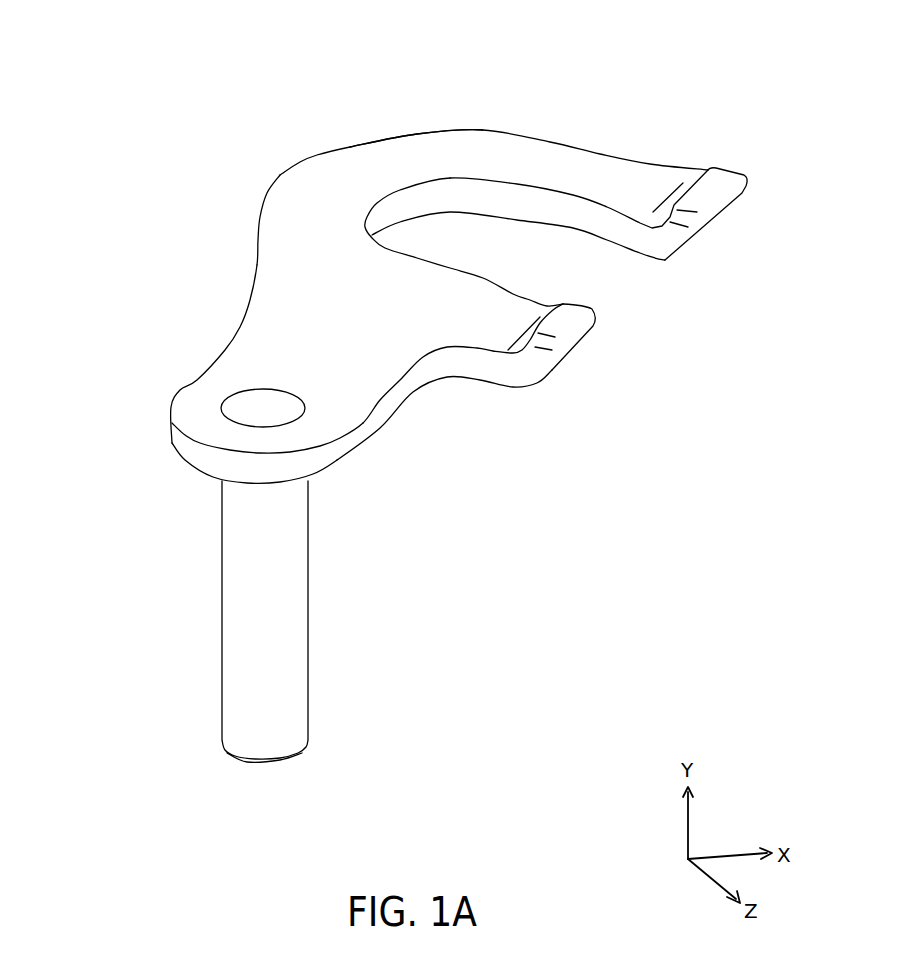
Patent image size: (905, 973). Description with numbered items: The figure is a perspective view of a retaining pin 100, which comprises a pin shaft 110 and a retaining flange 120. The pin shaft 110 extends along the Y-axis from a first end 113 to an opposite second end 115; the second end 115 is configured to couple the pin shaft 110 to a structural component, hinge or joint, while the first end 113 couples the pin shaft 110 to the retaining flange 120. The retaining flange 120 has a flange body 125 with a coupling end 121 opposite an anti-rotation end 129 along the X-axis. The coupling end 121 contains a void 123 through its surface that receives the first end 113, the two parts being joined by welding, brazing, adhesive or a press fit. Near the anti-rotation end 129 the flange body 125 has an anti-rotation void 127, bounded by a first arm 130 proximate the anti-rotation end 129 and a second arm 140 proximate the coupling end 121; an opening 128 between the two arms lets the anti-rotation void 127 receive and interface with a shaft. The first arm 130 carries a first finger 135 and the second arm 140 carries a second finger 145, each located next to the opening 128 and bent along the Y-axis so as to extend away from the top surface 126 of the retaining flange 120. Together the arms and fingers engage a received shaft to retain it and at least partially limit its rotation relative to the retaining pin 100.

The retaining pin 100 is at (134, 90).
The pin shaft 110 is at (300, 607).
The first end 113 is at (273, 413).
The second end 115 is at (268, 762).
The retaining flange 120 is at (272, 168).
The coupling end 121 is at (198, 428).
The void 123 is at (220, 407).
The flange body 125 is at (290, 312).
The top surface 126 is at (267, 242).
The anti-rotation void 127 is at (514, 262).
The opening 128 is at (630, 288).
The anti-rotation end 129 is at (417, 144).
The first arm 130 is at (556, 152).
The first finger 135 is at (722, 172).
The second arm 140 is at (497, 330).
The second finger 145 is at (565, 323).